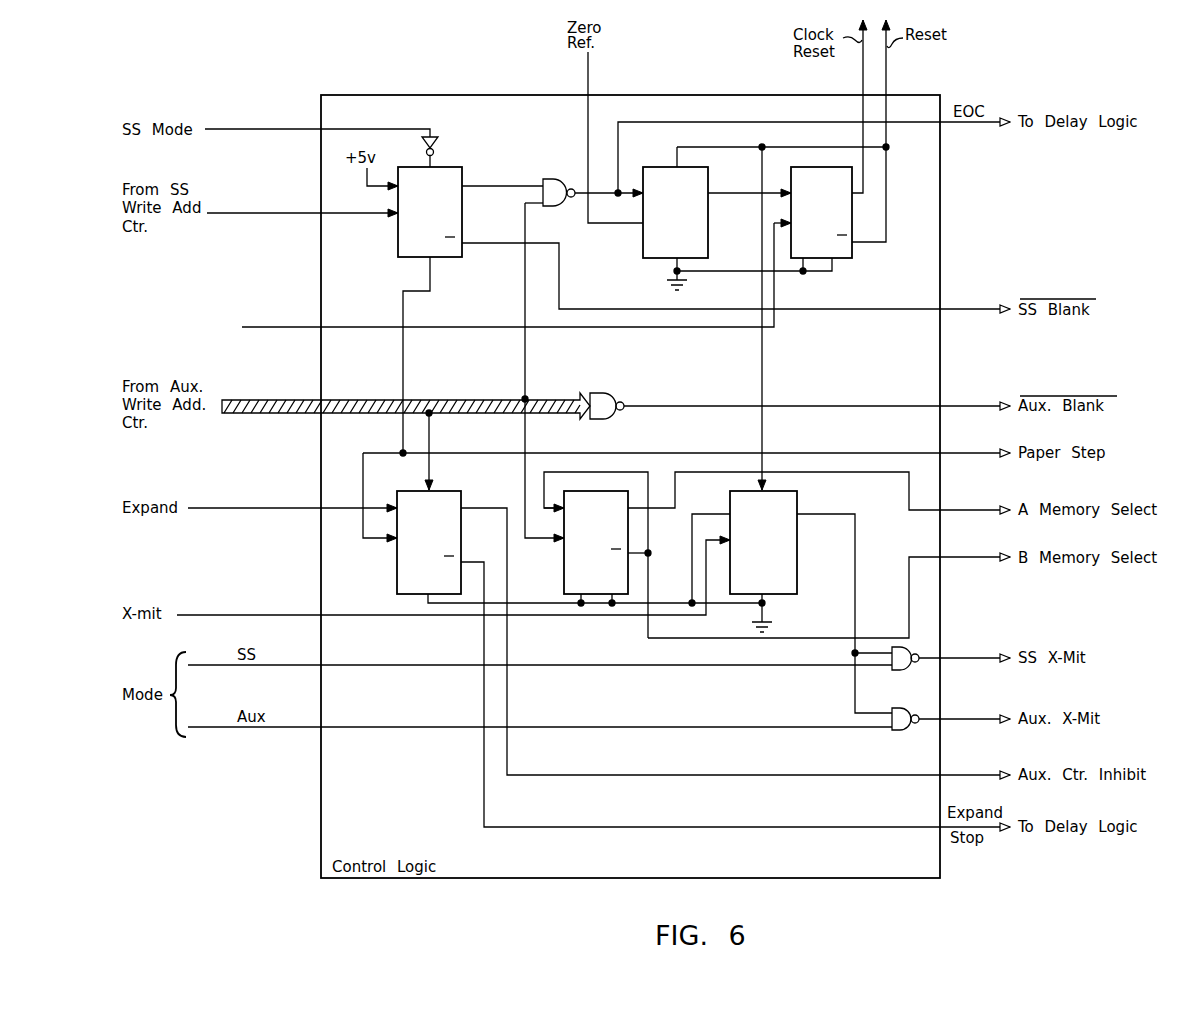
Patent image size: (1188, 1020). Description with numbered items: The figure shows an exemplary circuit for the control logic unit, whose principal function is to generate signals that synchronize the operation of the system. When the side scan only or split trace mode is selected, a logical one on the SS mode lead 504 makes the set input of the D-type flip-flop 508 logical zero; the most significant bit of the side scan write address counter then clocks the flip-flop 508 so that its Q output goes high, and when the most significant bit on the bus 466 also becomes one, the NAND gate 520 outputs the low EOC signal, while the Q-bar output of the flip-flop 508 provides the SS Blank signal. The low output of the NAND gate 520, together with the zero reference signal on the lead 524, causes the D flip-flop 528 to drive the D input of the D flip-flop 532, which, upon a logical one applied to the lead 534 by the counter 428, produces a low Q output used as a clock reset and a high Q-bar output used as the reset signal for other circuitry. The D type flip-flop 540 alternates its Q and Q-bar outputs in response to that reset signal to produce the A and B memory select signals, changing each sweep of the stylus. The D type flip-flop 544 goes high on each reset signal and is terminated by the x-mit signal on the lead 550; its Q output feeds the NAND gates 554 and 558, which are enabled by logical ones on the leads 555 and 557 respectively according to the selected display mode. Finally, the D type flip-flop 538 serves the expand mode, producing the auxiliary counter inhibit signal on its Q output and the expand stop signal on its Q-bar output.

The SS mode lead 504 is at (245, 128).
The D-type flip-flop 508 is at (462, 167).
The NAND gate 520 is at (551, 207).
The zero reference lead 524 is at (590, 72).
The D flip-flop 528 is at (643, 252).
The D flip-flop 532 is at (852, 252).
The lead 534 is at (448, 289).
The counter 428 is at (178, 328).
The bus 466 is at (345, 399).
The D type flip-flop 538 is at (397, 560).
The D type flip-flop 540 is at (564, 560).
The D type flip-flop 544 is at (797, 572).
The x-mit lead 550 is at (548, 616).
The NAND gate 554 is at (903, 671).
The lead 555 is at (378, 667).
The lead 557 is at (378, 729).
The NAND gate 558 is at (903, 731).